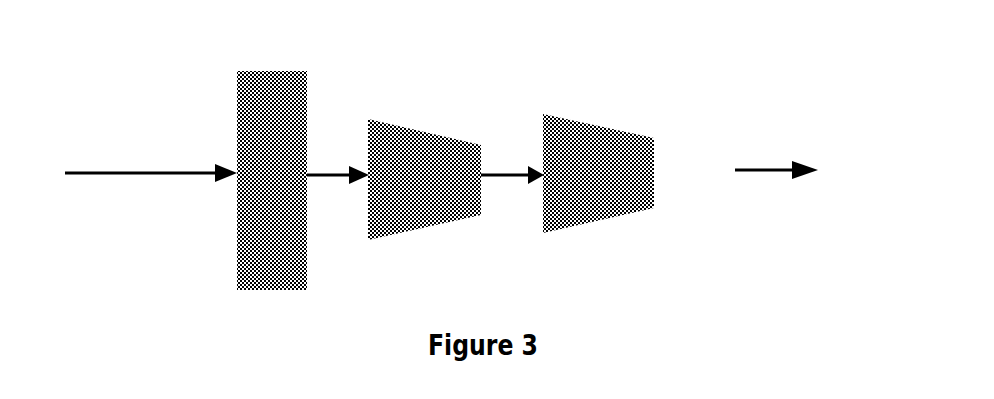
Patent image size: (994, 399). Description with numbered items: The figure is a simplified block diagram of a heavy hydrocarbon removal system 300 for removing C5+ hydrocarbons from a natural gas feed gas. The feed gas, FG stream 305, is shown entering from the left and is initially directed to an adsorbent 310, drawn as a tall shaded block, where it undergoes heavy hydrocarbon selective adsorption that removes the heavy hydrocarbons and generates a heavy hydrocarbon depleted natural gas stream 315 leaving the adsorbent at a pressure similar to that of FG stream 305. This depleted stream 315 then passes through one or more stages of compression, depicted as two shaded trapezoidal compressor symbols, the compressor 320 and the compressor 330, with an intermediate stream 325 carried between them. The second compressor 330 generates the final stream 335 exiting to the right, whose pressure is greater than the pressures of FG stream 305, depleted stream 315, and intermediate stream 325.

The heavy hydrocarbon removal system 300 is at (805, 62).
The FG stream 305 is at (151, 162).
The adsorbent 310 is at (253, 163).
The heavy hydrocarbon depleted natural gas stream 315 is at (338, 168).
The compressor 320 is at (424, 179).
The stream 325 is at (512, 167).
The compressor 330 is at (603, 183).
The final stream 335 is at (776, 161).